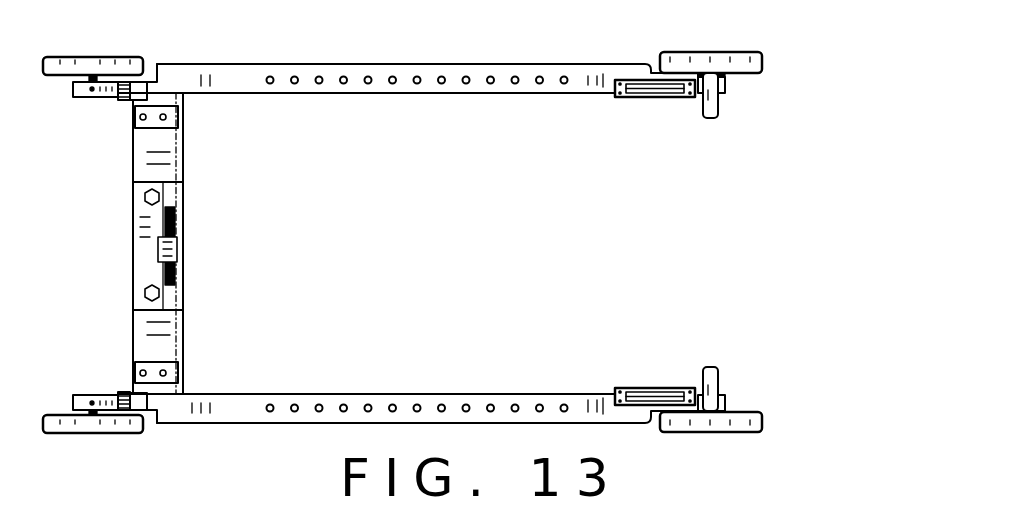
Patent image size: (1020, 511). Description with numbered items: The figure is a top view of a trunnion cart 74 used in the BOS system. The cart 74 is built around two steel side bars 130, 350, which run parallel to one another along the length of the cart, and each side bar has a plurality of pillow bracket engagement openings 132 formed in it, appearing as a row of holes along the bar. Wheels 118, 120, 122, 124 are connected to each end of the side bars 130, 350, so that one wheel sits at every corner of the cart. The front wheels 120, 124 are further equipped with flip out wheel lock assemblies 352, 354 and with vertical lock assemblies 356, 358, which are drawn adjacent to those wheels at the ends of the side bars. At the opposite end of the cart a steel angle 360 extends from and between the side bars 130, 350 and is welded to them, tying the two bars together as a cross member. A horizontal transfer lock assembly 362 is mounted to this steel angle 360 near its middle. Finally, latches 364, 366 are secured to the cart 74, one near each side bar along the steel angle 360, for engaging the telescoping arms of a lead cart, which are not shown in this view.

The trunnion cart 74 is at (258, 440).
The wheel 118 is at (83, 433).
The front wheel 120 is at (697, 432).
The wheel 122 is at (92, 57).
The front wheel 124 is at (717, 50).
The side bar 130 is at (307, 415).
The pillow bracket engagement openings 132 is at (367, 84).
The side bar 350 is at (481, 84).
The flip out wheel lock assembly 352 is at (719, 103).
The flip out wheel lock assembly 354 is at (719, 382).
The vertical lock assembly 356 is at (652, 98).
The vertical lock assembly 358 is at (655, 387).
The steel angle 360 is at (184, 152).
The horizontal transfer lock assembly 362 is at (145, 252).
The latch 364 is at (173, 117).
The latch 366 is at (173, 373).